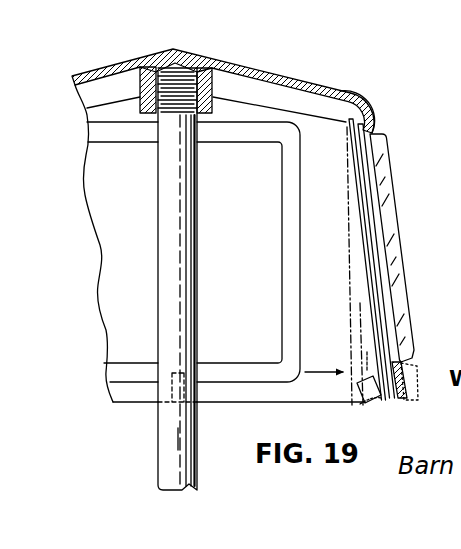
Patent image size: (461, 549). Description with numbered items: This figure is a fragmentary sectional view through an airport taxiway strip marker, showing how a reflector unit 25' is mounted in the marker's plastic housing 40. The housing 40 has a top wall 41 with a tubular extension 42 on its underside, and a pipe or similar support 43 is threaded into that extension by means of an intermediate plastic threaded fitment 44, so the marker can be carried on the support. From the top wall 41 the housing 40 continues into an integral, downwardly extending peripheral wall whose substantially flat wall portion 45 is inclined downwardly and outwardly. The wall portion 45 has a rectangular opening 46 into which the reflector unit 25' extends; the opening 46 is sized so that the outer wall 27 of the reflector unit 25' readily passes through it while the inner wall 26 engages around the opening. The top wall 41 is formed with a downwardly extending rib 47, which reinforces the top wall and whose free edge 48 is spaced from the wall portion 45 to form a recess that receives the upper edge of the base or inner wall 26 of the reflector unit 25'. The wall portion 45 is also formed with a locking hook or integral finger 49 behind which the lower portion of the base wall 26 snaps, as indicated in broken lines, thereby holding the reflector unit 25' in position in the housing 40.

The housing 40 is at (83, 68).
The top wall 41 is at (255, 67).
The tubular extension 42 is at (207, 57).
The pipe or support 43 is at (172, 453).
The threaded fitment 44 is at (152, 66).
The wall portion 45 is at (366, 131).
The rectangular opening 46 is at (398, 352).
The rib 47 is at (316, 118).
The free edge 48 is at (341, 94).
The locking hook or integral finger 49 is at (358, 401).
The reflector unit 25' is at (401, 264).
The inner wall 26 is at (388, 400).
The outer wall 27 is at (401, 298).